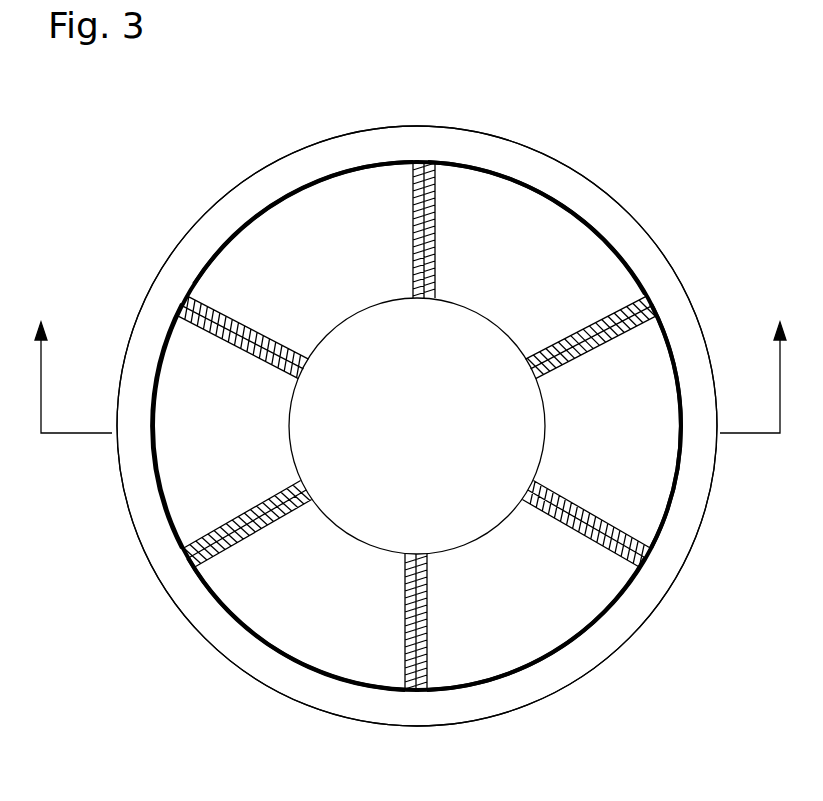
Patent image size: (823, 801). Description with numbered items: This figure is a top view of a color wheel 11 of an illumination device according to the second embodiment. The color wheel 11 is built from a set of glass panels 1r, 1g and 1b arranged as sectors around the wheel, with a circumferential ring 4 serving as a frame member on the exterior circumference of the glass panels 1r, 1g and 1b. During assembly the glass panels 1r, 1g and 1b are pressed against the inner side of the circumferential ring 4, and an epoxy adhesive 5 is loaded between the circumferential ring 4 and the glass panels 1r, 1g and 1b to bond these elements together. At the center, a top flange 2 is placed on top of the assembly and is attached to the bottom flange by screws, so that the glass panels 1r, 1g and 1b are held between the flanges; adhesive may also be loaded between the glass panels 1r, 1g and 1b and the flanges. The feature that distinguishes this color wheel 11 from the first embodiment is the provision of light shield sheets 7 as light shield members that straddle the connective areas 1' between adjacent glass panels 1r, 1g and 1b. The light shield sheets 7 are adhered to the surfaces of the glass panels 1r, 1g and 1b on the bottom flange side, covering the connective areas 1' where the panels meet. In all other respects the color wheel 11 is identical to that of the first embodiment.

The color wheel 11 is at (722, 53).
The epoxy adhesive 5 is at (618, 228).
The light shield sheets 7 is at (437, 200).
The glass panel 1b is at (545, 205).
The glass panel 1r is at (255, 228).
The glass panel 1g is at (175, 483).
The top flange 2 is at (357, 332).
The connective areas 1' is at (417, 426).
The circumferential ring 4 is at (361, 106).